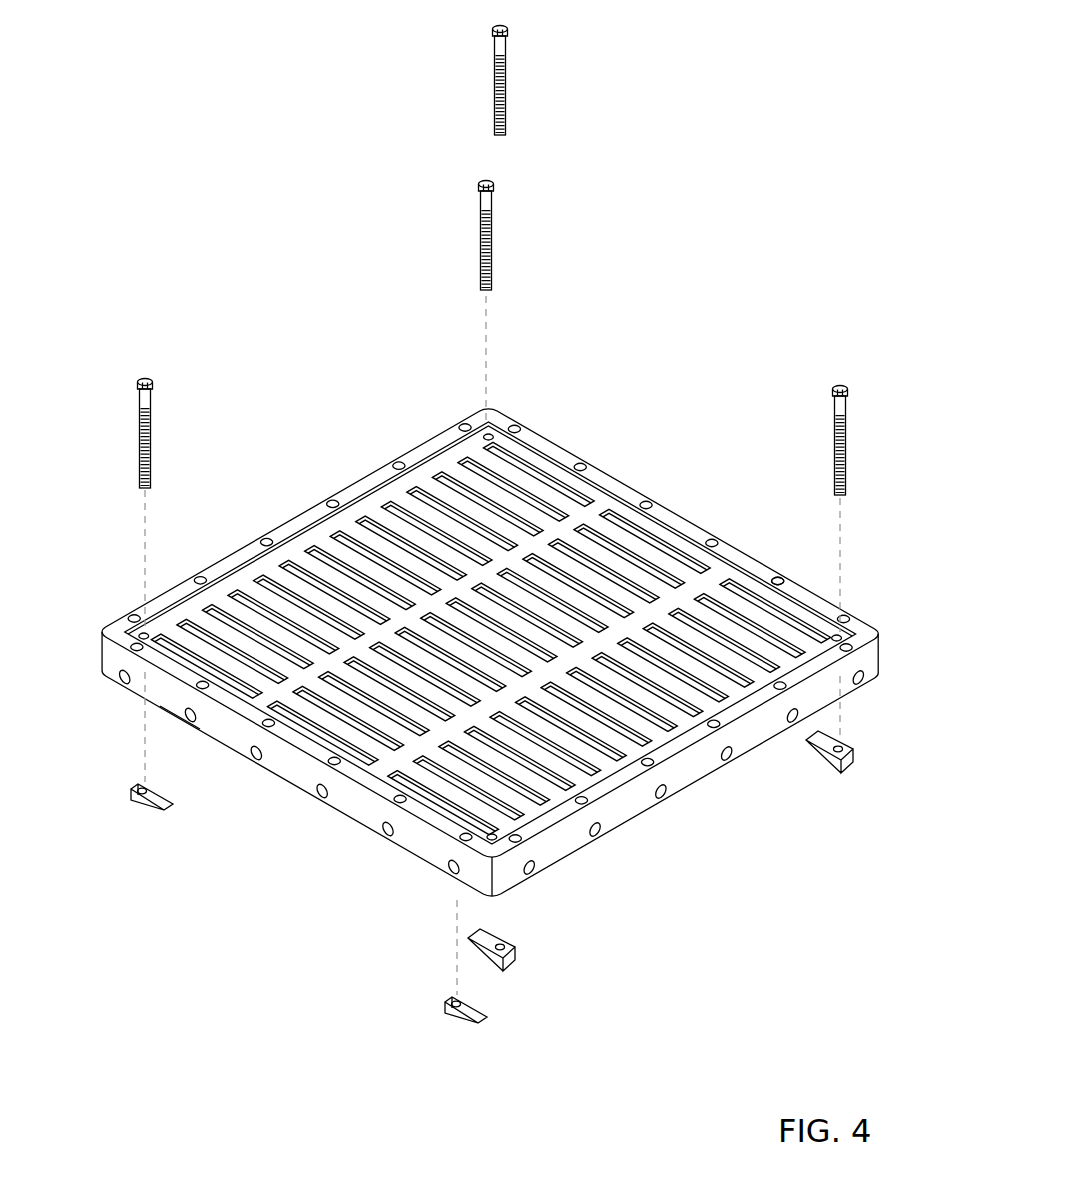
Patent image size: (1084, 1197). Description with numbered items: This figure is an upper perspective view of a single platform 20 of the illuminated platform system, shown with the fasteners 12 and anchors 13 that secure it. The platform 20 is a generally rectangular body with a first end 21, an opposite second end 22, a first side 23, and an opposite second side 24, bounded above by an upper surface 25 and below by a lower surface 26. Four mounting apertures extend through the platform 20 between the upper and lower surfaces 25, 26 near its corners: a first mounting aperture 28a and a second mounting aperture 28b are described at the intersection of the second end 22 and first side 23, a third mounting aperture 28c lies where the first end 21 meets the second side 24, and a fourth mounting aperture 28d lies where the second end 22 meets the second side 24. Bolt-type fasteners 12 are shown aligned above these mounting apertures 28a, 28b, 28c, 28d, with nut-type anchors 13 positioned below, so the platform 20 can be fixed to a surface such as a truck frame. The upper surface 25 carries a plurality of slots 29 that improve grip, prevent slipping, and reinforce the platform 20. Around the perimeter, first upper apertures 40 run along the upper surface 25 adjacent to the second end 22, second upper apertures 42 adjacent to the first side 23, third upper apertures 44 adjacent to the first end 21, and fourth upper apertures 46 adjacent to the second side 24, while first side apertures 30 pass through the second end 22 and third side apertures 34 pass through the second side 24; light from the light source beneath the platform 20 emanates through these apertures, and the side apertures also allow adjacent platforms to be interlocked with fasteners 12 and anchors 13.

The fastener 12 is at (508, 50).
The anchor 13 is at (147, 803).
The platform 20 is at (566, 430).
The first end 21 is at (625, 482).
The second end 22 is at (300, 778).
The first side 23 is at (350, 478).
The second side 24 is at (575, 835).
The upper surface 25 is at (432, 478).
The lower surface 26 is at (240, 775).
The first mounting aperture 28a is at (147, 628).
The second mounting aperture 28b is at (470, 432).
The third mounting aperture 28c is at (838, 630).
The fourth mounting aperture 28d is at (570, 835).
The slot 29 is at (575, 778).
The first side apertures 30 is at (452, 868).
The third side apertures 34 is at (780, 700).
The first upper apertures 40 is at (388, 812).
The second upper apertures 42 is at (265, 533).
The third upper apertures 44 is at (727, 760).
The fourth upper apertures 46 is at (660, 498).